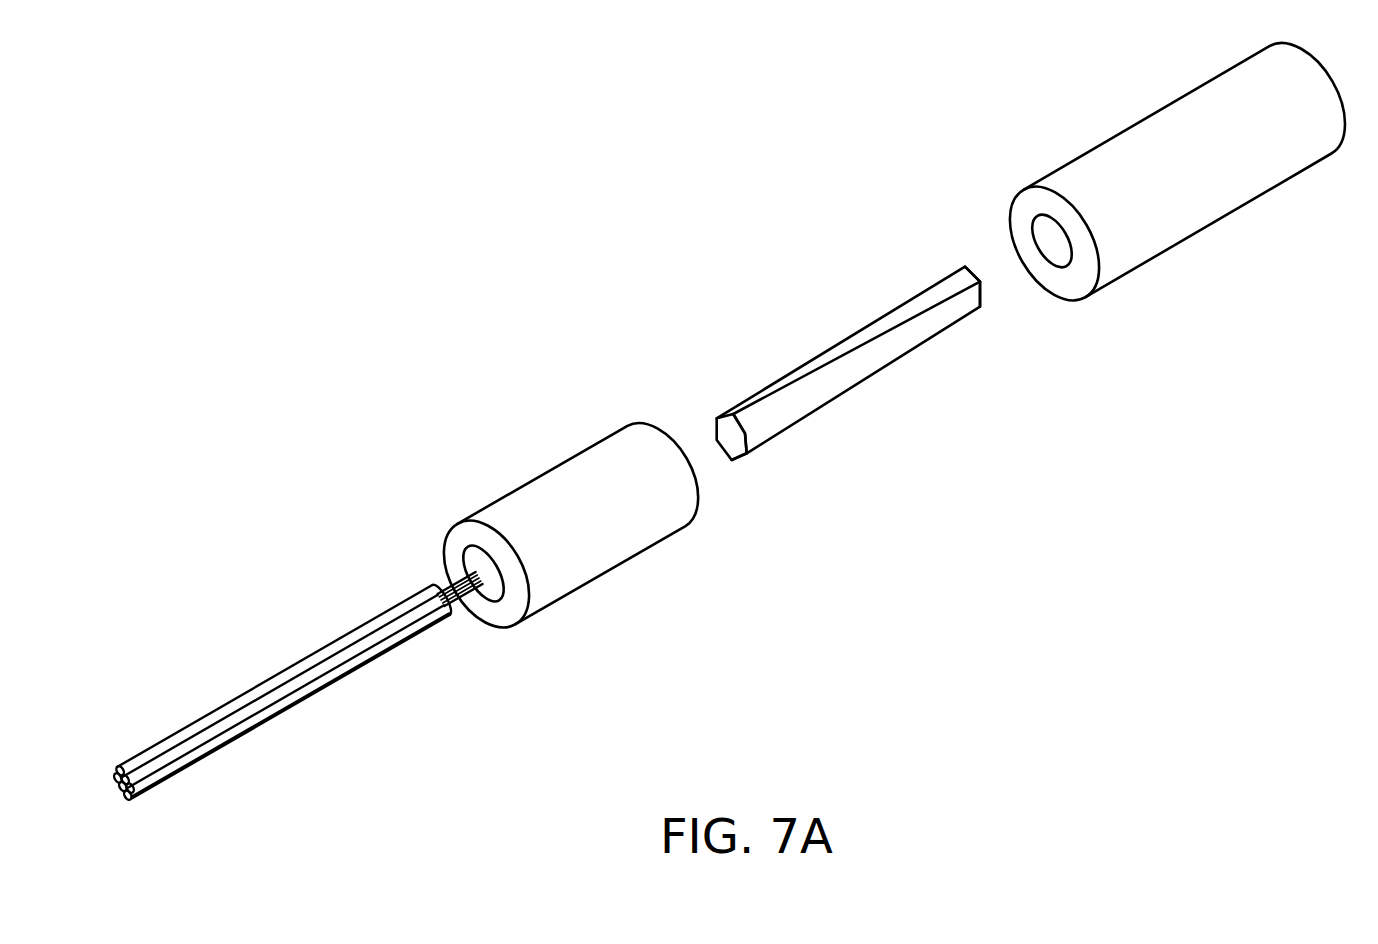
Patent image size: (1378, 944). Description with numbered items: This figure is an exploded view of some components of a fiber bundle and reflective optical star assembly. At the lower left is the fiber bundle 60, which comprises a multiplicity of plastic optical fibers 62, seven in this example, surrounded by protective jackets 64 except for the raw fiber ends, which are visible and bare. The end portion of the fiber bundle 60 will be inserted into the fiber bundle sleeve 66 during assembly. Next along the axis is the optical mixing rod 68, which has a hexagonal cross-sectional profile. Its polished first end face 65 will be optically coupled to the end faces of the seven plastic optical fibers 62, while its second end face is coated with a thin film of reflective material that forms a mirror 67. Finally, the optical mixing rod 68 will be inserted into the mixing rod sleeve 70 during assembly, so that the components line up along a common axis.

The fiber bundle 60 is at (229, 691).
The plastic optical fibers 62 is at (462, 610).
The protective jackets 64 is at (207, 757).
The first end face 65 is at (738, 433).
The fiber bundle sleeve 66 is at (625, 560).
The mirror 67 is at (980, 288).
The optical mixing rod 68 is at (818, 405).
The mixing rod sleeve 70 is at (1238, 210).